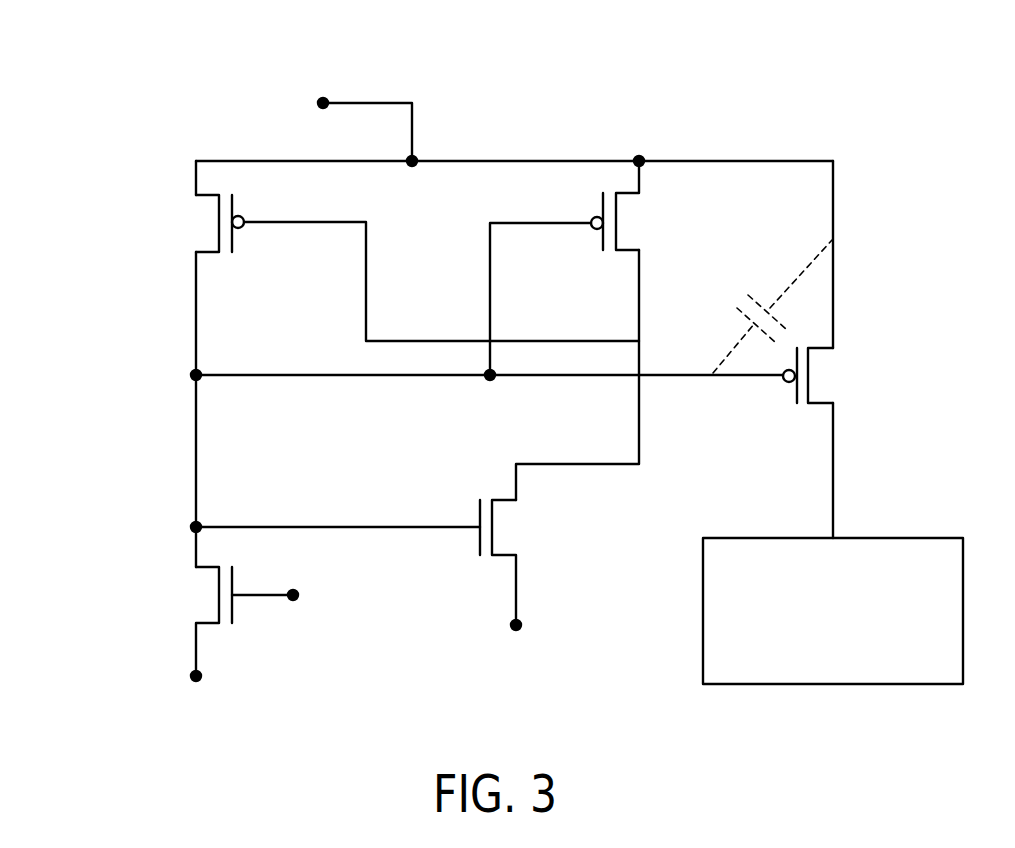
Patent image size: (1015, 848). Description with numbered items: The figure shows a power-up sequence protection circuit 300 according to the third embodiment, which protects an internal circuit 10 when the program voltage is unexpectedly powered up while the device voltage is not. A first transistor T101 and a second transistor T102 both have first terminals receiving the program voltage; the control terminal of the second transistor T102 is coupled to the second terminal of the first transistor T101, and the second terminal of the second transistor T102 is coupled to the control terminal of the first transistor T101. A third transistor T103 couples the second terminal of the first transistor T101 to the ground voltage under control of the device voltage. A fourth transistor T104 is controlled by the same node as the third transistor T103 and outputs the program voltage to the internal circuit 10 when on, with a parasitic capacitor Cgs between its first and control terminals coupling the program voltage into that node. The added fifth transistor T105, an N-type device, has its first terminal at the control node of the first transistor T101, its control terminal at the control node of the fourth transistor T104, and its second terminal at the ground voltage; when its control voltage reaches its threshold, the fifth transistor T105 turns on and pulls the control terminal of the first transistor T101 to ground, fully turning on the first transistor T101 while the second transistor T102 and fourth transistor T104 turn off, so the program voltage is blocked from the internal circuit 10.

The power-up sequence protection circuit 300 is at (884, 78).
The internal circuit 10 is at (935, 628).
The first transistor T101 is at (192, 223).
The second transistor T102 is at (644, 205).
The third transistor T103 is at (234, 645).
The fourth transistor T104 is at (835, 375).
The fifth transistor T105 is at (521, 584).
The parasitic capacitor Cgs is at (767, 306).